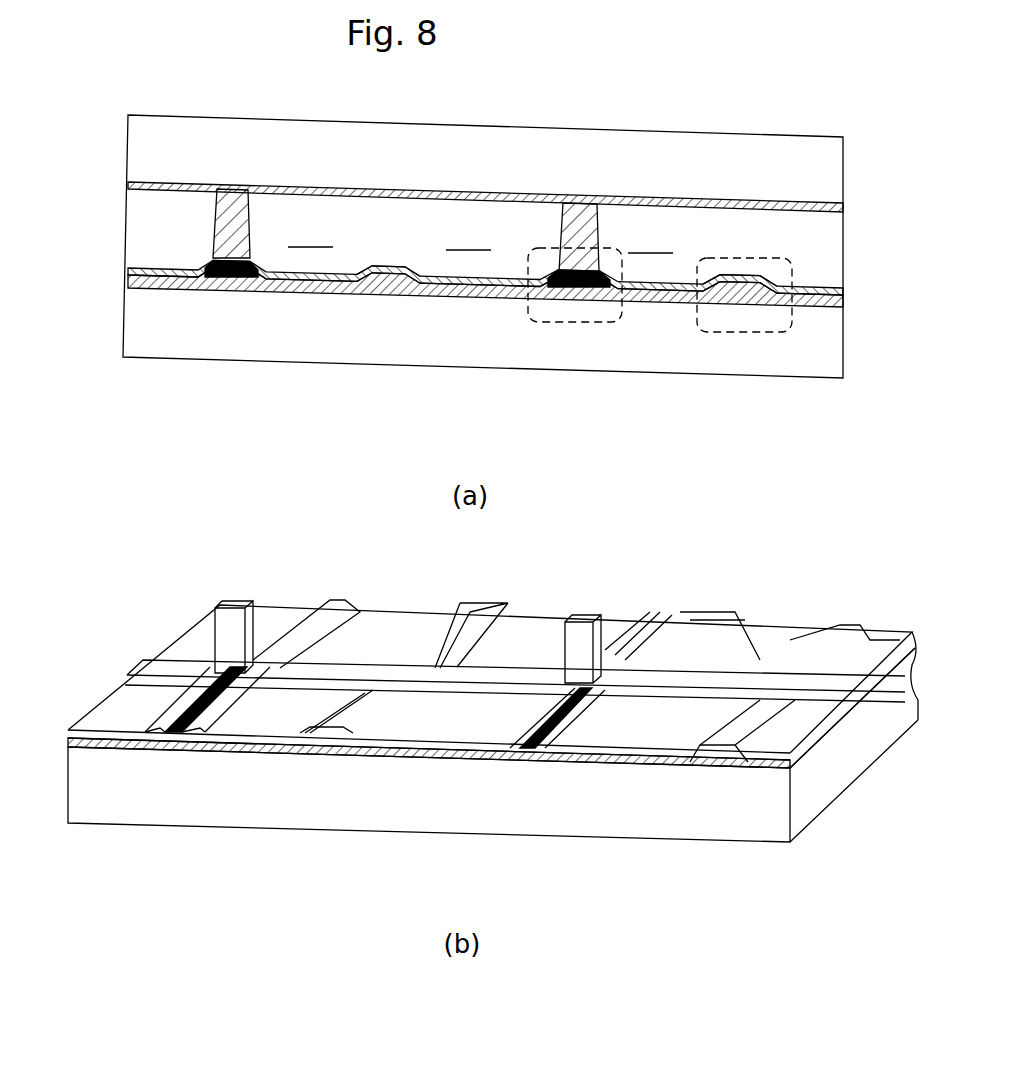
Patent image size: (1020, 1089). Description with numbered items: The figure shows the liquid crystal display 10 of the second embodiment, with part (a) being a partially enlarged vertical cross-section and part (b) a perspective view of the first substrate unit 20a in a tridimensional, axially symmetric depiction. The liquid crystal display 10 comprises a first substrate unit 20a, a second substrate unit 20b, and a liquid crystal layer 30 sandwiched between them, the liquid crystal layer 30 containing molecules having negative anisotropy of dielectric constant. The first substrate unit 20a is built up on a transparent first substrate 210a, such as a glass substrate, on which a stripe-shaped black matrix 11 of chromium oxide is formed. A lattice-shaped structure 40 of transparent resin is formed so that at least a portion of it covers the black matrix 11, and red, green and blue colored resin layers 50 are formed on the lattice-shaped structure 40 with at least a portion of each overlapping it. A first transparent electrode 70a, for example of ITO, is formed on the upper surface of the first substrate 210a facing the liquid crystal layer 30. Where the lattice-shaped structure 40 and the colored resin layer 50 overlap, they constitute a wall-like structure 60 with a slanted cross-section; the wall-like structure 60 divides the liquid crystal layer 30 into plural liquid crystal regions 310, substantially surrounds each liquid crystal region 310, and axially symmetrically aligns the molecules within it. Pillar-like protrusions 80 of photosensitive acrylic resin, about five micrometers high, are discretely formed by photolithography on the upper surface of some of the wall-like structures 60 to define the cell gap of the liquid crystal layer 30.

The liquid crystal display 10 is at (683, 112).
The first substrate unit 20a is at (855, 282).
The second substrate unit 20b is at (855, 137).
The liquid crystal layer 30 is at (813, 243).
The liquid crystal region 310 is at (480, 237).
The pillar-like protrusion 80 is at (230, 208).
The wall-like structure 60 is at (617, 317).
The black matrix 11 is at (235, 290).
The lattice-shaped structure 40 is at (388, 290).
The colored resin layer 50 is at (318, 292).
The first transparent electrode 70a is at (472, 290).
The first substrate 210a is at (182, 327).